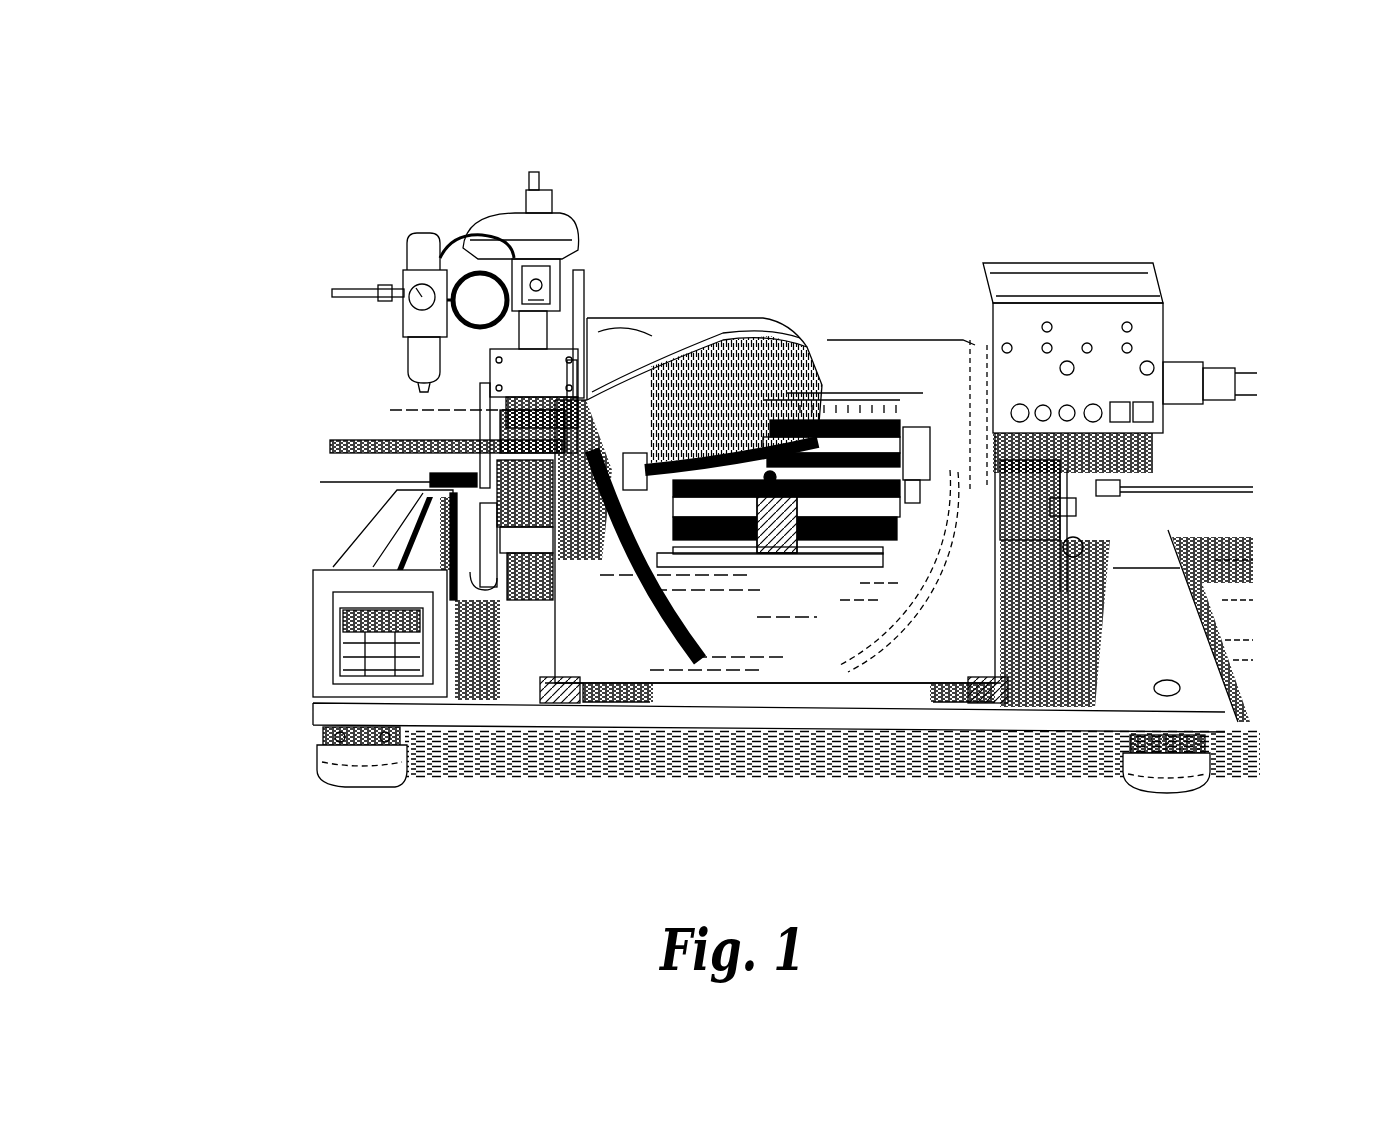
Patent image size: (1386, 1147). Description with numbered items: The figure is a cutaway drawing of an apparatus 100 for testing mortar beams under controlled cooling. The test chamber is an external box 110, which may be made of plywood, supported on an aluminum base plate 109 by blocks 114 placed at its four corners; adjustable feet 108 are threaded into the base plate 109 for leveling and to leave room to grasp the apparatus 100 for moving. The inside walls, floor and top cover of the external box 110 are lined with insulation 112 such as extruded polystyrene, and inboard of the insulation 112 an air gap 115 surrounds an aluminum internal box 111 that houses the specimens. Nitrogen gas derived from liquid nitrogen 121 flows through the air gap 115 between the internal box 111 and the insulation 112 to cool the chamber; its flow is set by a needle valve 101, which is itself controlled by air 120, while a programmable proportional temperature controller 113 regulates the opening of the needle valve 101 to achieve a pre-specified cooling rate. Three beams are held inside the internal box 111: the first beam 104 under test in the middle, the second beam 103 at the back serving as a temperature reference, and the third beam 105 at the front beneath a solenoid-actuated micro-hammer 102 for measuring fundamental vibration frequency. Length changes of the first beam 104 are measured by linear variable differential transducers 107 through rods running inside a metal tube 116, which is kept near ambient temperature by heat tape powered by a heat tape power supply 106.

The apparatus 100 is at (420, 126).
The needle valve 101 is at (527, 215).
The solenoid-actuated micro-hammer 102 is at (727, 343).
The second beam 103 is at (803, 445).
The first beam 104 is at (818, 475).
The third beam 105 is at (833, 510).
The heat tape power supply 106 is at (1133, 283).
The linear variable differential transducers 107 is at (1110, 488).
The adjustable feet 108 is at (1182, 780).
The base plate 109 is at (910, 722).
The external box 110 is at (653, 657).
The internal box 111 is at (713, 562).
The insulation 112 is at (788, 362).
The programmable proportional temperature controller 113 is at (333, 637).
The blocks 114 is at (553, 697).
The air gap 115 is at (849, 582).
The metal tube 116 is at (922, 475).
The air 120 is at (320, 293).
The liquid nitrogen 121 is at (328, 431).